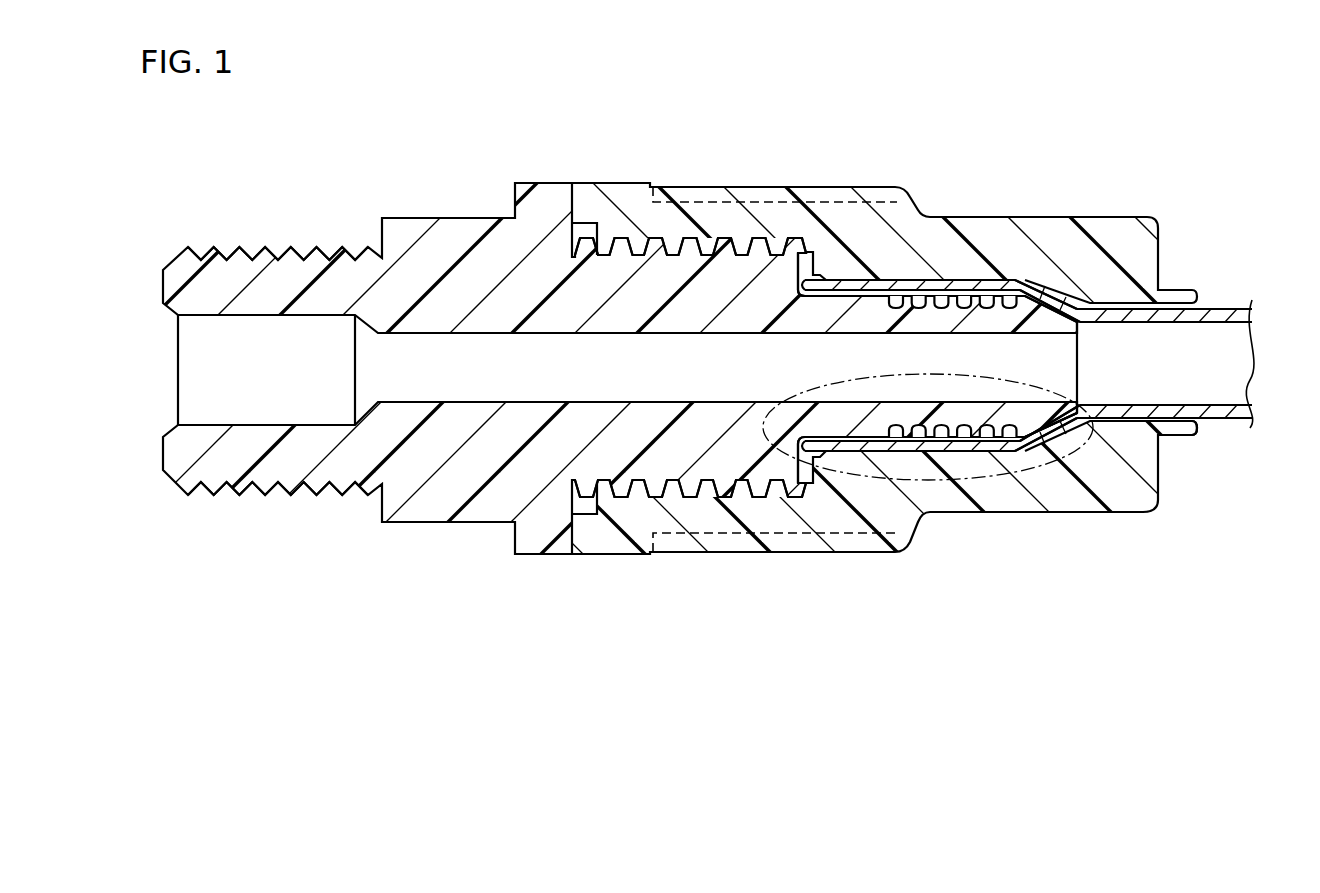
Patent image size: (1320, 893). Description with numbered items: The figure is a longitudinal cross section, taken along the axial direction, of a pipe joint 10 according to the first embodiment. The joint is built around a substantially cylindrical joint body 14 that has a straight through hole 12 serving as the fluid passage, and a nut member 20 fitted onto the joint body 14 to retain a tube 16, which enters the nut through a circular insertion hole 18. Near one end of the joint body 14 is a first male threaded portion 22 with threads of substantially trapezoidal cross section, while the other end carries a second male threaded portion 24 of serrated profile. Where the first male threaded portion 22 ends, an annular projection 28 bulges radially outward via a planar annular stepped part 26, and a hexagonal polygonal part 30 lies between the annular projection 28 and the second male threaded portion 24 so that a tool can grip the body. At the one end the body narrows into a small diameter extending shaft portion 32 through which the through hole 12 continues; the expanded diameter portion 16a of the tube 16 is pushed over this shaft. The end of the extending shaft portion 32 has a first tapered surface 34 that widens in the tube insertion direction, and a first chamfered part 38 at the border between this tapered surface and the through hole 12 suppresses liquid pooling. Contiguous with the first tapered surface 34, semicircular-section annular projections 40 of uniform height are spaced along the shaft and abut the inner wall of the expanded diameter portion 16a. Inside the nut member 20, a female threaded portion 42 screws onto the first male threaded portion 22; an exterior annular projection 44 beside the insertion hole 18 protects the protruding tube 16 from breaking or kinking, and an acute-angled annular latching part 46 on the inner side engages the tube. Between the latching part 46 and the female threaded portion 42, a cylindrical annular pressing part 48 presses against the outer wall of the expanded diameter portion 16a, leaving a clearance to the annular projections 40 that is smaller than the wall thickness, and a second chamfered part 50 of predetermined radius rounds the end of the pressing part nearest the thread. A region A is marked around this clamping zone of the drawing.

The pipe joint 10 is at (421, 80).
The through hole 12 is at (540, 378).
The joint body 14 is at (437, 200).
The tube 16 is at (1215, 307).
The expanded diameter portion 16a is at (972, 280).
The insertion hole 18 is at (1130, 311).
The nut member 20 is at (923, 198).
The first male threaded portion 22 is at (623, 248).
The second male threaded portion 24 is at (258, 246).
The annular stepped part 26 is at (574, 192).
The annular projection 28 is at (547, 193).
The polygonal part 30 is at (435, 523).
The extending shaft portion 32 is at (941, 335).
The first tapered surface 34 is at (1063, 283).
The first chamfered part 38 is at (1077, 401).
The annular projections 40 is at (925, 428).
The female threaded portion 42 is at (671, 240).
The annular projection 44 is at (1180, 437).
The annular latching part 46 is at (1082, 422).
The annular pressing part 48 is at (993, 320).
The second chamfered part 50 is at (808, 432).
The region A is at (1003, 374).